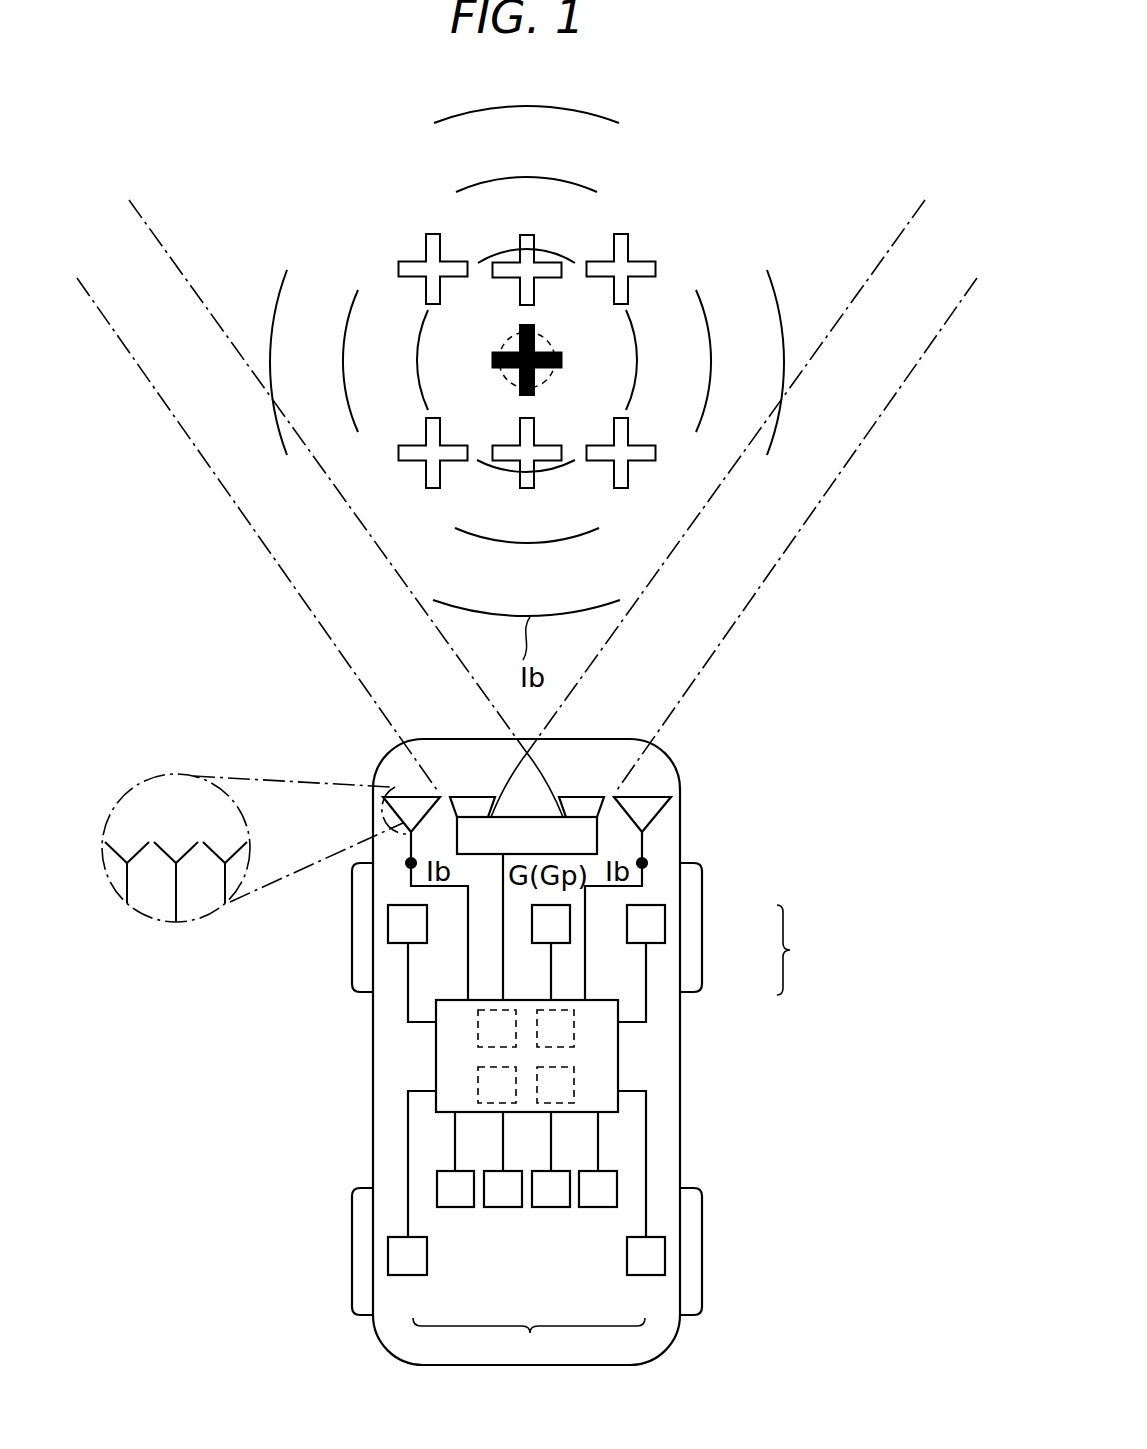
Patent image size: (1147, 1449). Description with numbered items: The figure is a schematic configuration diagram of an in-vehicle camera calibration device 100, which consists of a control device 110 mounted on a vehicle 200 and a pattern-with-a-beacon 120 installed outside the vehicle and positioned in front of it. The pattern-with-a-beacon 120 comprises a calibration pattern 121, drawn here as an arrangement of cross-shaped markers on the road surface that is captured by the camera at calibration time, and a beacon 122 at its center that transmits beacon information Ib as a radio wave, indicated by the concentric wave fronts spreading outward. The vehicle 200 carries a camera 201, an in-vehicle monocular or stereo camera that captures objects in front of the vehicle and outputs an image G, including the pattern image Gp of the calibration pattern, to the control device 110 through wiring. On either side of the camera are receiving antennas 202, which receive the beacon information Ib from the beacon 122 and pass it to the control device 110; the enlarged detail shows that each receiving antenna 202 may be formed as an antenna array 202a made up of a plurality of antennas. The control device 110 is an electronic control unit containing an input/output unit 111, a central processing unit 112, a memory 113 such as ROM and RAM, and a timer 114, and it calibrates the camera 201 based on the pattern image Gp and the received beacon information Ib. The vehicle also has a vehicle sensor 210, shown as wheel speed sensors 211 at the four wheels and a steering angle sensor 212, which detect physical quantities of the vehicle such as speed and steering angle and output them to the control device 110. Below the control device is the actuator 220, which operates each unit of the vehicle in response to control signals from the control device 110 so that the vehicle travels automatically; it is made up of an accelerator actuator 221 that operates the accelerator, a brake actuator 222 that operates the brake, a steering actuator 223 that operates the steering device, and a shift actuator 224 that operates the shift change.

The in-vehicle camera calibration device 100 is at (203, 152).
The pattern-with-a-beacon 120 is at (682, 214).
The calibration pattern 121 is at (413, 259).
The beacon 122 is at (545, 383).
The vehicle 200 is at (720, 752).
The camera 201 is at (532, 813).
The receiving antenna 202 is at (423, 797).
The antenna array 202a is at (153, 818).
The vehicle sensor 210 is at (811, 950).
The wheel speed sensor 211 is at (398, 923).
The steering angle sensor 212 is at (560, 925).
The control device 110 is at (440, 992).
The input/output unit 111 is at (478, 1040).
The central processing unit 112 is at (478, 1073).
The memory 113 is at (574, 1040).
The timer 114 is at (574, 1073).
The actuator 220 is at (529, 1342).
The accelerator actuator 221 is at (457, 1197).
The brake actuator 222 is at (503, 1197).
The steering actuator 223 is at (550, 1197).
The shift actuator 224 is at (597, 1197).